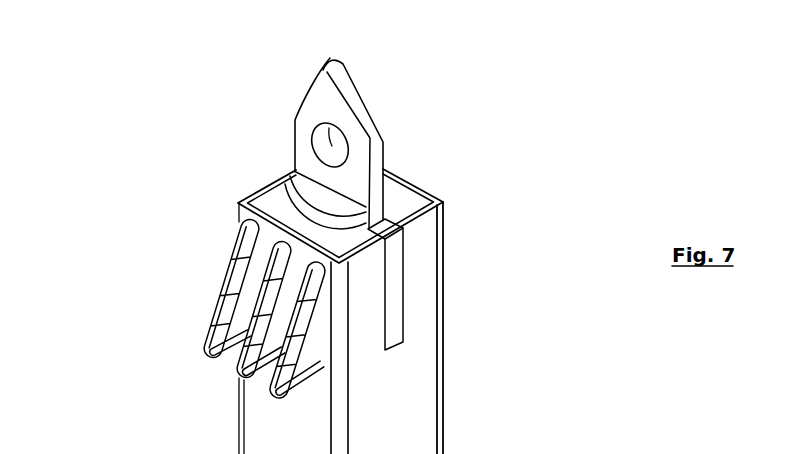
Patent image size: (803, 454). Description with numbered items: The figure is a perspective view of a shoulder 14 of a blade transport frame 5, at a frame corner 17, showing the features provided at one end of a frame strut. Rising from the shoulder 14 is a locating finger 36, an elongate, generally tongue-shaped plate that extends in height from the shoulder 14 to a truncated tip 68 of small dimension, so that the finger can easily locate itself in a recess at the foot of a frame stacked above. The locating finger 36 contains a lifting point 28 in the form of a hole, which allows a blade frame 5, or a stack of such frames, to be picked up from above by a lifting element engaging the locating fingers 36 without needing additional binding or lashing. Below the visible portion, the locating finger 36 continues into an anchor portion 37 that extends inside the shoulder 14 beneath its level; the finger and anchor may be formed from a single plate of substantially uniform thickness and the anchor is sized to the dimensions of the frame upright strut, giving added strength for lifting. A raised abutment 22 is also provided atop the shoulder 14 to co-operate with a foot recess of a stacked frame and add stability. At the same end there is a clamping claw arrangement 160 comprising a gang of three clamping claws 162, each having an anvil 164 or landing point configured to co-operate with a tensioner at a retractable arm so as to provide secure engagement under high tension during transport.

The transport frame 5 is at (528, 122).
The shoulder 14 is at (415, 198).
The frame corner 17 is at (570, 202).
The raised abutment 22 is at (308, 200).
The lifting point 28 is at (335, 122).
The locating finger 36 is at (303, 147).
The anchor portion 37 is at (393, 318).
The truncated tip 68 is at (365, 77).
The clamping claw arrangement 160 is at (162, 290).
The clamping claw 162 is at (213, 318).
The anvil 164 is at (300, 388).